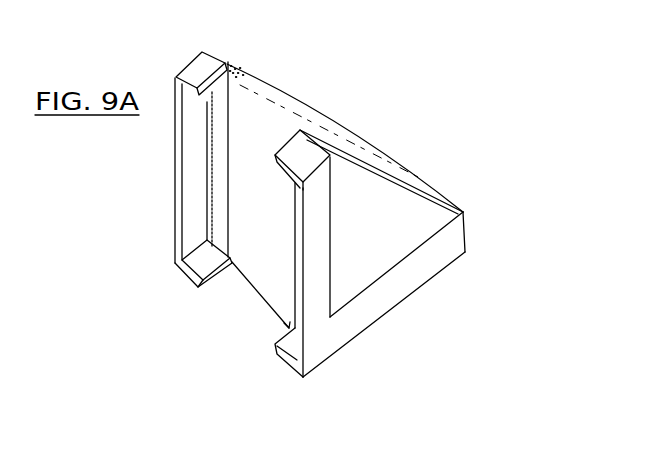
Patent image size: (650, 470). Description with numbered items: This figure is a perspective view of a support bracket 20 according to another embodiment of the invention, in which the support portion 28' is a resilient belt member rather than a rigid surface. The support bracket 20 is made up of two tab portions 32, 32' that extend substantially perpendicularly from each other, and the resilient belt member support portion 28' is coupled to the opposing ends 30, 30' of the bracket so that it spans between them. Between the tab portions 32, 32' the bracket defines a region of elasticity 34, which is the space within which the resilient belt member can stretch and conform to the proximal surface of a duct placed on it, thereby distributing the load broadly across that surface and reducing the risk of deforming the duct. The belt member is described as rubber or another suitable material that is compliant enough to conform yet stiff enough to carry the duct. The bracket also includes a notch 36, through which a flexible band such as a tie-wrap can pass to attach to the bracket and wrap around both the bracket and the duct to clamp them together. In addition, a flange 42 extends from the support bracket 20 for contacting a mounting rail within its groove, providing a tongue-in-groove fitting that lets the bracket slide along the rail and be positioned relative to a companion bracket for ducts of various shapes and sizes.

The support bracket 20 is at (167, 58).
The opposing end 30' is at (224, 49).
The notch 36 is at (211, 84).
The tab portion 32' is at (171, 162).
The region of elasticity 34 is at (374, 219).
The support portion 28' is at (228, 332).
The flange 42 is at (366, 330).
The tab portion 32 is at (386, 343).
The opposing end 30 is at (390, 220).